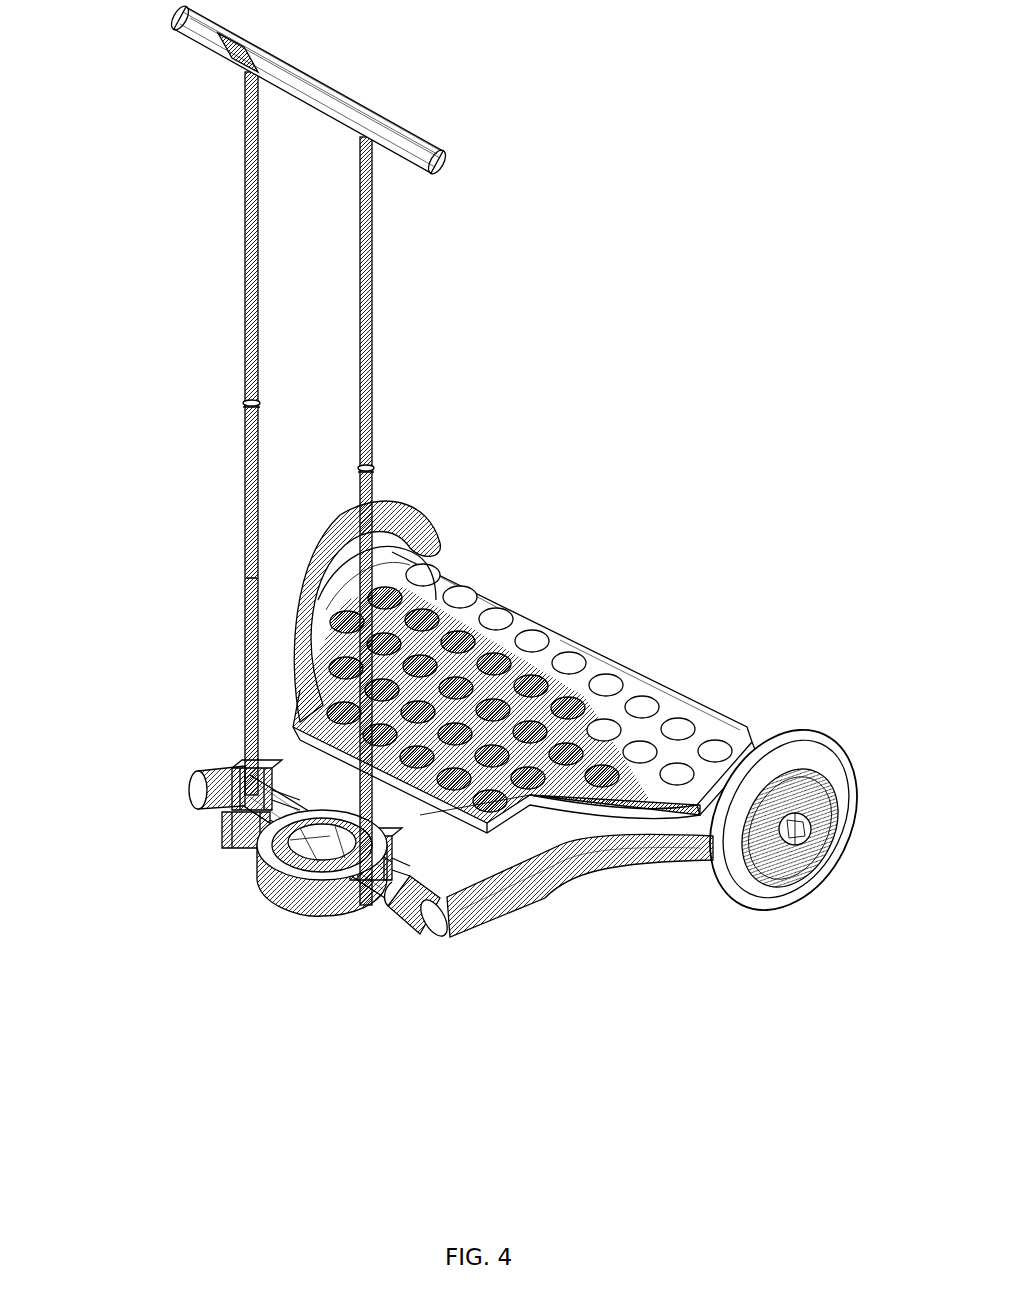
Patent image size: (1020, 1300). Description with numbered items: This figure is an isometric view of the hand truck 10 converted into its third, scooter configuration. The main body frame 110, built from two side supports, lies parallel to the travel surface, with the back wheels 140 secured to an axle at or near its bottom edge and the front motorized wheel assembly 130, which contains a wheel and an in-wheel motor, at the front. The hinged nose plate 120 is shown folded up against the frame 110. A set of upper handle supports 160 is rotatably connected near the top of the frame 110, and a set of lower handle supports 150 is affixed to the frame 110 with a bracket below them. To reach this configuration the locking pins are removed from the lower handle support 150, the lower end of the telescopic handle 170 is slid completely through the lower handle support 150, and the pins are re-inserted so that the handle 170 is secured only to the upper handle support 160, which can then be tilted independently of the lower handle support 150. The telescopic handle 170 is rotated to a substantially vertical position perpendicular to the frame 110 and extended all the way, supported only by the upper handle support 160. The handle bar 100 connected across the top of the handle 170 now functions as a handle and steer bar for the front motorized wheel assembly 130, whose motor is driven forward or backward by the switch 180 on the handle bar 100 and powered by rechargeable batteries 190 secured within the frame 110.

The hand truck 10 is at (628, 180).
The handle bar 100 is at (166, 21).
The frame 110 is at (282, 718).
The hinged nose plate 120 is at (546, 667).
The front motorized wheel assembly 130 is at (418, 936).
The back wheels 140 is at (433, 522).
The lower handle supports 150 is at (532, 842).
The upper handle supports 160 is at (232, 841).
The telescopic handle 170 is at (241, 428).
The switch 180 is at (252, 889).
The rechargeable batteries 190 is at (214, 58).